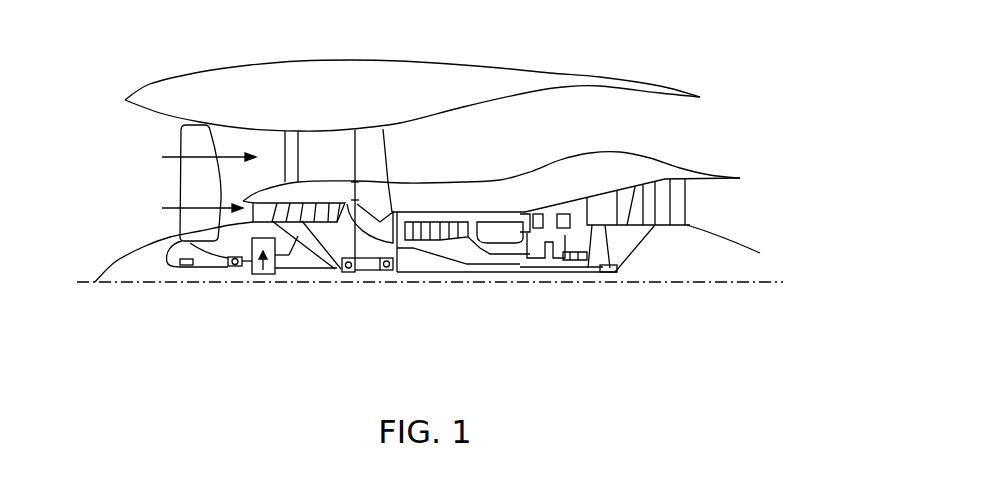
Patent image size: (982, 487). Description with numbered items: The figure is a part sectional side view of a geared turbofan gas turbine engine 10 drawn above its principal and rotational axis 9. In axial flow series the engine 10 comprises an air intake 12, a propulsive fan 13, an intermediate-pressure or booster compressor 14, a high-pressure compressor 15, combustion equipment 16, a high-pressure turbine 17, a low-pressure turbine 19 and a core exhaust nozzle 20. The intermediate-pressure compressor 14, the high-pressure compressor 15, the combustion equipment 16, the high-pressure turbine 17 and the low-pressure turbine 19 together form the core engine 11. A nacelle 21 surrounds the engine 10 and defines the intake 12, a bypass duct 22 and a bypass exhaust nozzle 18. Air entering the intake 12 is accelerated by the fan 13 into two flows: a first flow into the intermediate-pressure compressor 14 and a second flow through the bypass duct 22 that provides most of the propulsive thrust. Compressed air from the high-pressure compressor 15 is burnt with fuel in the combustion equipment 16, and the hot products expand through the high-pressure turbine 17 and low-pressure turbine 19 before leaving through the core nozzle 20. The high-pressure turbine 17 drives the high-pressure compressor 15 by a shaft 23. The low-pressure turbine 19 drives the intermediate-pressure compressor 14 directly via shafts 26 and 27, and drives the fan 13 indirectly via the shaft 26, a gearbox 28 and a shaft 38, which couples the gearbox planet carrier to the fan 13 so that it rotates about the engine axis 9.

The principal and rotational axis 9 is at (660, 283).
The geared turbofan gas turbine engine 10 is at (163, 75).
The core engine 11 is at (491, 221).
The air intake 12 is at (141, 128).
The propulsive fan 13 is at (190, 186).
The intermediate-pressure compressor 14 is at (320, 200).
The high-pressure compressor 15 is at (440, 232).
The combustion equipment 16 is at (507, 238).
The high-pressure turbine 17 is at (551, 222).
The bypass exhaust nozzle 18 is at (672, 113).
The low-pressure turbine 19 is at (662, 194).
The core exhaust nozzle 20 is at (723, 205).
The nacelle 21 is at (389, 70).
The bypass duct 22 is at (596, 132).
The shaft 23 is at (515, 258).
The shaft 26 is at (432, 272).
The shaft 27 is at (313, 246).
The gearbox 28 is at (262, 276).
The shaft 38 is at (200, 267).